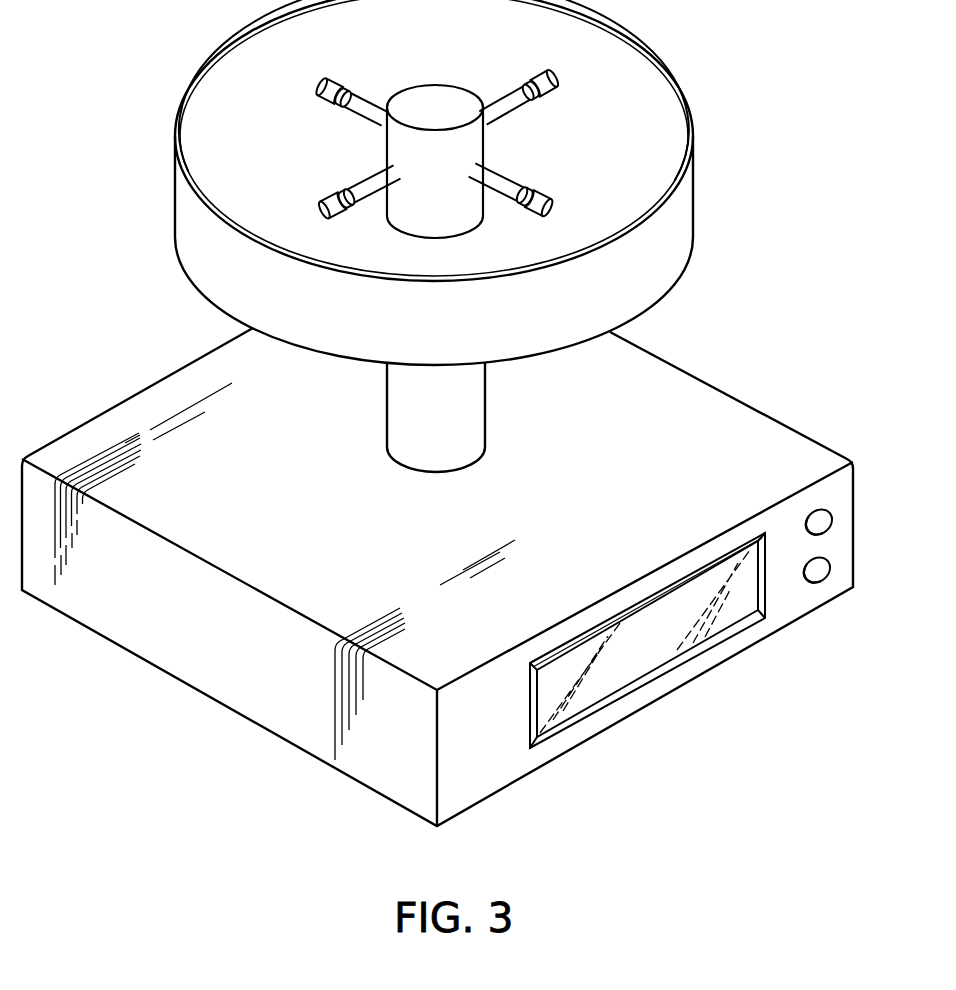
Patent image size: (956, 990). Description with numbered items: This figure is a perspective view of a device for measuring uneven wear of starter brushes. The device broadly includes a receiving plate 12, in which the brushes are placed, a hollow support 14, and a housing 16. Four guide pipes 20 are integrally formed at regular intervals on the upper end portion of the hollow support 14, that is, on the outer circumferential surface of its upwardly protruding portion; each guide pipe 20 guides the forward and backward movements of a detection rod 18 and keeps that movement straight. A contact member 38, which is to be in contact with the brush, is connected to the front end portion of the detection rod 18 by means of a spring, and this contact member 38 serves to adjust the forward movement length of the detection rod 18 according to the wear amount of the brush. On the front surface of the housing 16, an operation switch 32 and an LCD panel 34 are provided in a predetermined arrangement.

The receiving plate 12 is at (443, 36).
The hollow support 14 is at (450, 167).
The housing 16 is at (733, 474).
The detection rod 18 is at (344, 190).
The guide pipe 20 is at (371, 106).
The operation switch 32 is at (828, 571).
The LCD panel 34 is at (647, 669).
The contact member 38 is at (335, 196).